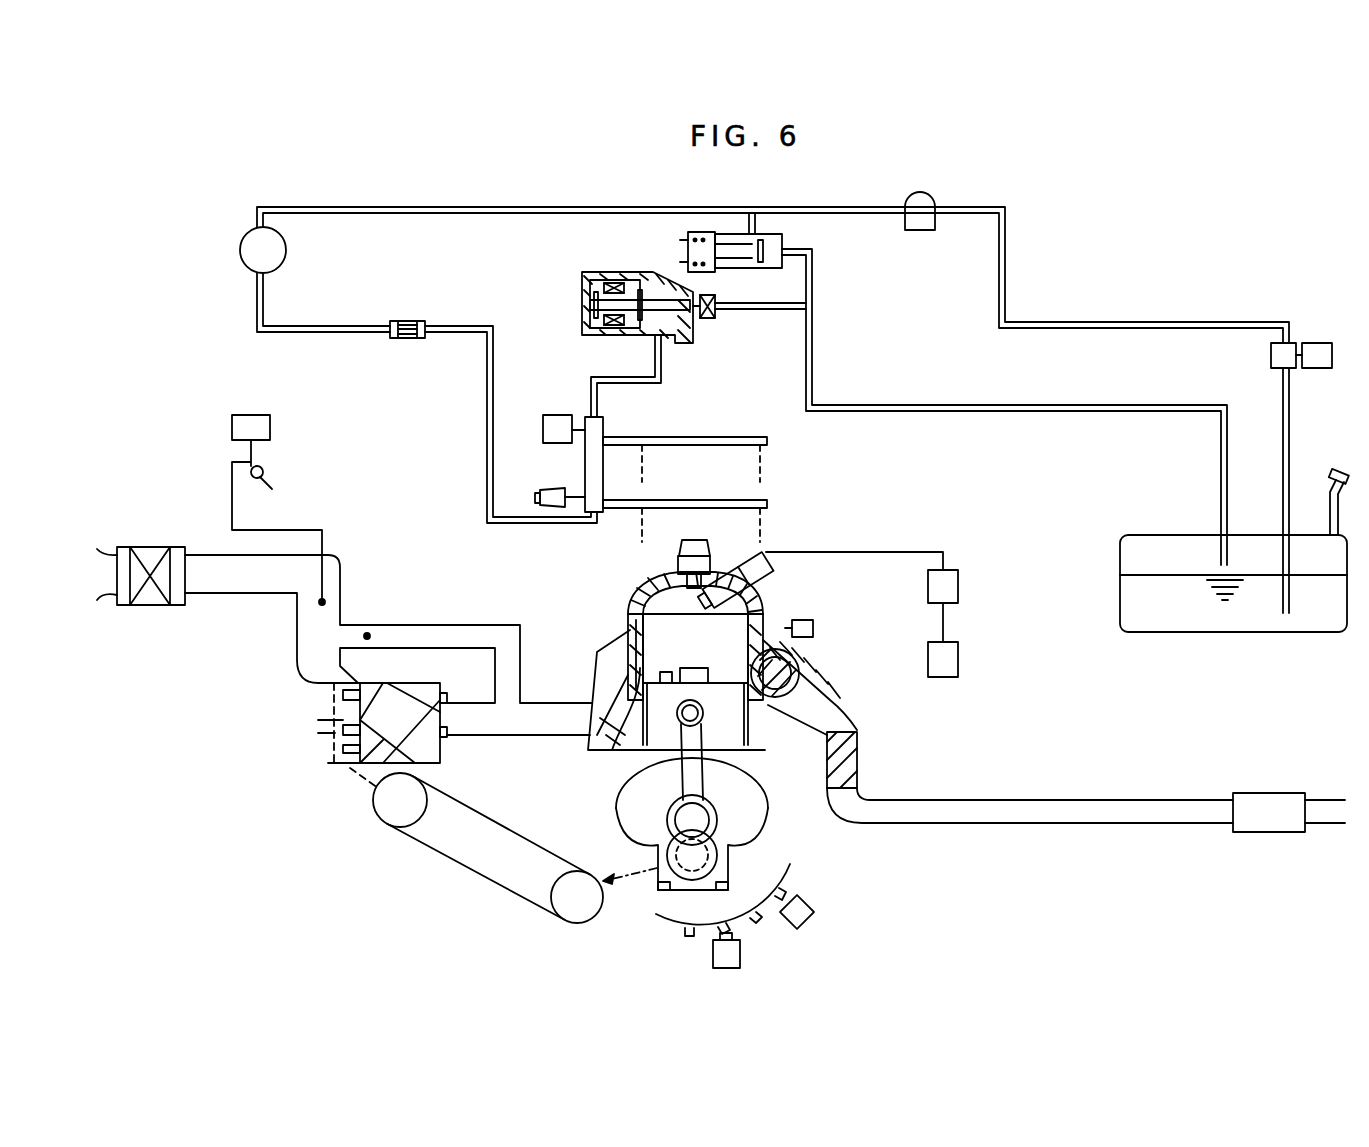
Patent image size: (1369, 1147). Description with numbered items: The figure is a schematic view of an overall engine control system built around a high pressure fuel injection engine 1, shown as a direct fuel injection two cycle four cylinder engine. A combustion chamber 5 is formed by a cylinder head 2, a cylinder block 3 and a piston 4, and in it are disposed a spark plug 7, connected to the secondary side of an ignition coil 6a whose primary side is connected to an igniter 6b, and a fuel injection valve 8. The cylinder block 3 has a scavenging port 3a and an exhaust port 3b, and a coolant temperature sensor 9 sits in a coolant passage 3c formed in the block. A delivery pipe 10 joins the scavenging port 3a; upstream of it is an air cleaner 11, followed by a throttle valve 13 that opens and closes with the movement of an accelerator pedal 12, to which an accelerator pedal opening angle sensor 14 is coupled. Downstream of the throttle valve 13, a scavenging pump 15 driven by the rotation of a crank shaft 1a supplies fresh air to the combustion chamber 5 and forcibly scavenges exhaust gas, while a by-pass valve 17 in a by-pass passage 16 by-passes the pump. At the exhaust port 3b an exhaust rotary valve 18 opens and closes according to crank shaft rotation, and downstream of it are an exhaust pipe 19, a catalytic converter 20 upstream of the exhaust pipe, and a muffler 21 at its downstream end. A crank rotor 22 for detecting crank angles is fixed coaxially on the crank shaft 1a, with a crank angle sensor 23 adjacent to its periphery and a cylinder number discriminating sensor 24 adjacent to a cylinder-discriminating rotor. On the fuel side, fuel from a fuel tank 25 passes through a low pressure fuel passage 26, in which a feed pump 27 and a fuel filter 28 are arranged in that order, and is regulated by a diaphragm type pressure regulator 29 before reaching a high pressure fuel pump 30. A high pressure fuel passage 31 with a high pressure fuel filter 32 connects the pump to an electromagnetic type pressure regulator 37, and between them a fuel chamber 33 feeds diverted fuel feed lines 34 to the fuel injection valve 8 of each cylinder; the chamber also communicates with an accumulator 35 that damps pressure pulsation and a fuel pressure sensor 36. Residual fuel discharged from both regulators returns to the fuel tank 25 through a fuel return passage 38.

The high pressure fuel injection engine 1 is at (723, 741).
The crank shaft 1a is at (707, 812).
The cylinder head 2 is at (770, 630).
The cylinder block 3 is at (612, 650).
The scavenging port 3a is at (600, 722).
The exhaust port 3b is at (812, 695).
The coolant passage 3c is at (770, 648).
The piston 4 is at (645, 765).
The combustion chamber 5 is at (640, 602).
The ignition coil 6a is at (958, 588).
The igniter 6b is at (958, 660).
The spark plug 7 is at (775, 568).
The fuel injection valve 8 is at (682, 548).
The coolant temperature sensor 9 is at (815, 630).
The delivery pipe 10 is at (262, 598).
The air cleaner 11 is at (152, 547).
The accelerator pedal 12 is at (270, 482).
The throttle valve 13 is at (322, 604).
The accelerator pedal opening angle sensor 14 is at (232, 428).
The scavenging pump 15 is at (330, 690).
The by-pass passage 16 is at (512, 625).
The by-pass valve 17 is at (370, 634).
The exhaust rotary valve 18 is at (712, 838).
The exhaust pipe 19 is at (1045, 800).
The catalytic converter 20 is at (857, 762).
The muffler 21 is at (1268, 793).
The crank rotor 22 is at (800, 850).
The crank angle sensor 23 is at (805, 905).
The cylinder number discriminating sensor 24 is at (742, 952).
The fuel tank 25 is at (1236, 633).
The low pressure fuel passage 26 is at (500, 207).
The feed pump 27 is at (1316, 343).
The fuel filter 28 is at (920, 232).
The diaphragm type pressure regulator 29 is at (785, 245).
The high pressure fuel pump 30 is at (240, 258).
The high pressure fuel passage 31 is at (487, 415).
The high pressure fuel filter 32 is at (406, 321).
The fuel chamber 33 is at (583, 465).
The diverted fuel feed lines 34 is at (690, 438).
The accumulator 35 is at (558, 510).
The fuel pressure sensor 36 is at (543, 425).
The electromagnetic type pressure regulator 37 is at (580, 295).
The fuel return passage 38 is at (993, 405).